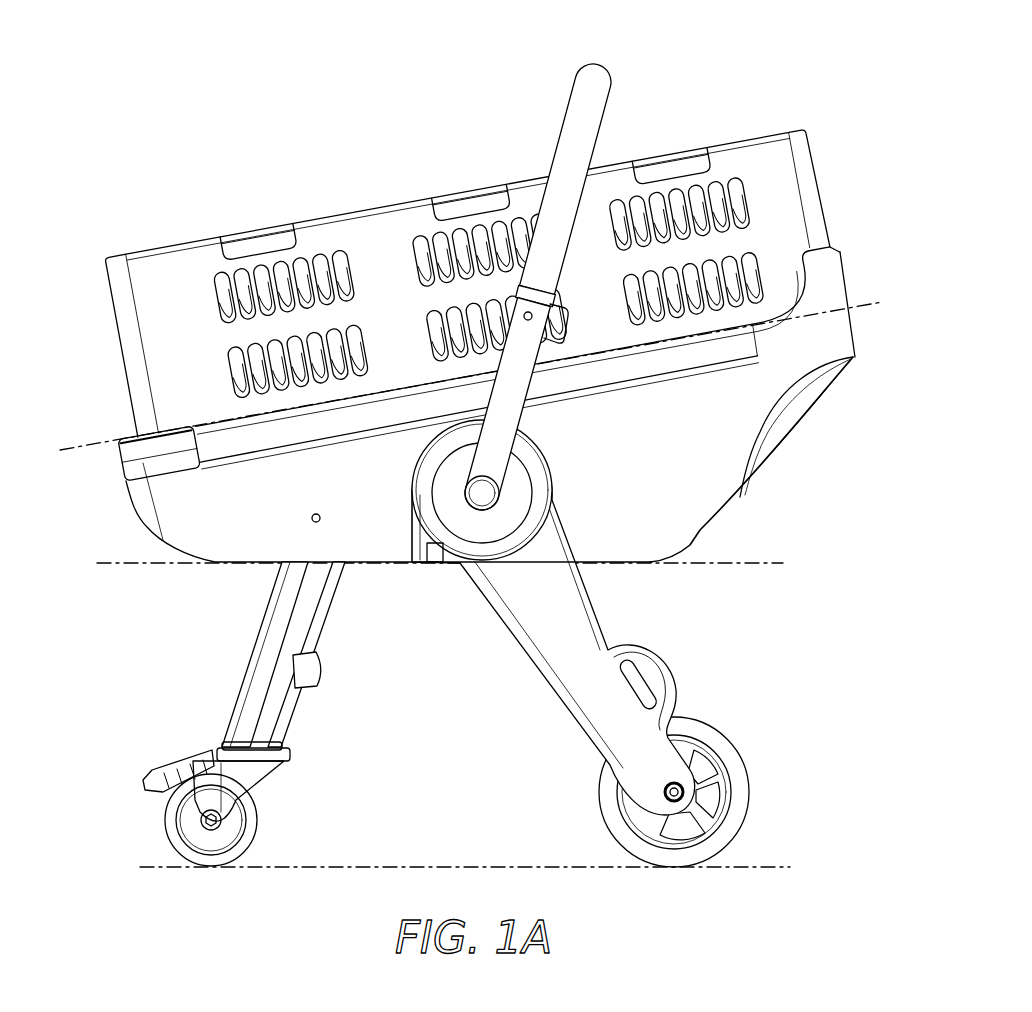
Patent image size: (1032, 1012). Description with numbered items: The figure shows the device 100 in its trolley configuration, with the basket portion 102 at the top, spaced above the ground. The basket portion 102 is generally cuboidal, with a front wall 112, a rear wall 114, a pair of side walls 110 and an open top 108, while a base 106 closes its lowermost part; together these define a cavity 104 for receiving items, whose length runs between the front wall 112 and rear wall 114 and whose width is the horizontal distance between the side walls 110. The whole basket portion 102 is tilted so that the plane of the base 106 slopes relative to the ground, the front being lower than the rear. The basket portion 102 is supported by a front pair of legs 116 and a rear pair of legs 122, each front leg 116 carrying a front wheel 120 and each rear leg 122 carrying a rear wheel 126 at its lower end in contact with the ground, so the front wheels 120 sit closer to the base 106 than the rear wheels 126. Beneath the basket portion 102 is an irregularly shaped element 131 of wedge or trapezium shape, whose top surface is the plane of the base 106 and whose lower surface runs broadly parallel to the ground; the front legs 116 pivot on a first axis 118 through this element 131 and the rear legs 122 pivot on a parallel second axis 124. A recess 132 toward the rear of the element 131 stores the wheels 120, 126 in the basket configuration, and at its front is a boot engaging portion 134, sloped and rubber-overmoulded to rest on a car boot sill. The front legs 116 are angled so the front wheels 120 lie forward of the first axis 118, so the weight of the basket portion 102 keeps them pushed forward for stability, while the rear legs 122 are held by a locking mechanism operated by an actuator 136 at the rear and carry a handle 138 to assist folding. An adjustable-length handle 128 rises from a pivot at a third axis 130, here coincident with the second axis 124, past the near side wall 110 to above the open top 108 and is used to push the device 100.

The device 100 is at (86, 129).
The basket portion 102 is at (474, 344).
The cavity 104 is at (246, 213).
The base 106 is at (182, 423).
The open top 108 is at (400, 196).
The side walls 110 is at (407, 315).
The front wall 112 is at (103, 311).
The rear wall 114 is at (822, 163).
The front legs 116 is at (261, 662).
The first axis 118 is at (318, 522).
The front wheels 120 is at (262, 822).
The rear legs 122 is at (571, 620).
The second axis 124 is at (474, 529).
The rear wheels 126 is at (606, 803).
The handle 128 is at (594, 66).
The third axis 130 is at (462, 565).
The irregularly shaped element 131 is at (826, 352).
The recess 132 is at (708, 493).
The boot engaging portion 134 is at (133, 503).
The actuator 136 is at (789, 438).
The handle 138 is at (660, 672).